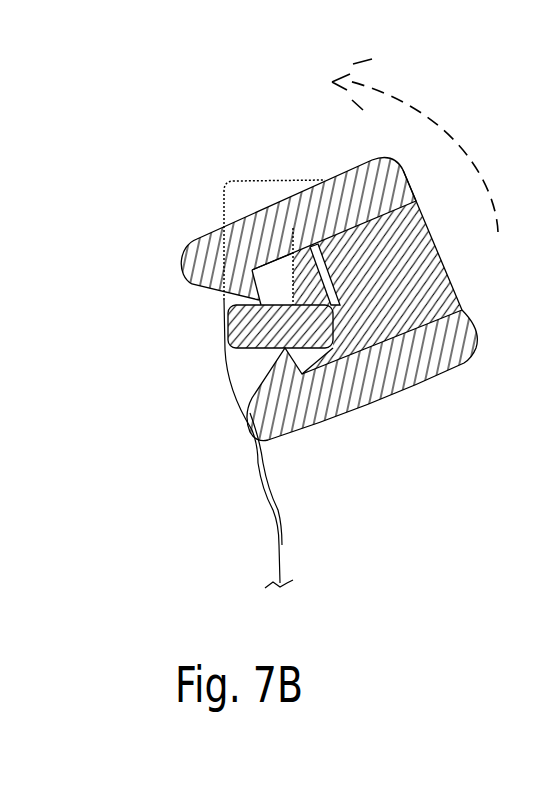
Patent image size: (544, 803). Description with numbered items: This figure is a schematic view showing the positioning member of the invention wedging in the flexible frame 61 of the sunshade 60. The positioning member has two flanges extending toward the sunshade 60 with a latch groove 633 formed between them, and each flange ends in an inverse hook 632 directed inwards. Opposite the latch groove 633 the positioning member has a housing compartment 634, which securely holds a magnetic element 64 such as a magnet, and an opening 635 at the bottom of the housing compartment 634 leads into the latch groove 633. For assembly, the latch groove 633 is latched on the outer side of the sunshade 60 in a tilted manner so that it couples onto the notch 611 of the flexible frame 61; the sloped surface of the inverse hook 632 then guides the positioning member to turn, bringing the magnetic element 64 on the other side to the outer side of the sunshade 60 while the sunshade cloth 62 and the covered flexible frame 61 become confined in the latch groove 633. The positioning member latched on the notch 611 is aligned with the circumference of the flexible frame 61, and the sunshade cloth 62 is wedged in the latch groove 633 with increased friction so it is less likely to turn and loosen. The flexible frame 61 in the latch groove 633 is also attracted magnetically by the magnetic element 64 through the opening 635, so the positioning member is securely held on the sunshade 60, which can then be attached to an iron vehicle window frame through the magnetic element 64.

The sunshade 60 is at (282, 542).
The flexible frame 61 is at (230, 320).
The notch 611 is at (292, 230).
The sunshade cloth 62 is at (280, 552).
The inverse hook 632 is at (252, 290).
The latch groove 633 is at (279, 287).
The housing compartment 634 is at (400, 330).
The opening 635 is at (343, 327).
The magnetic element 64 is at (385, 302).